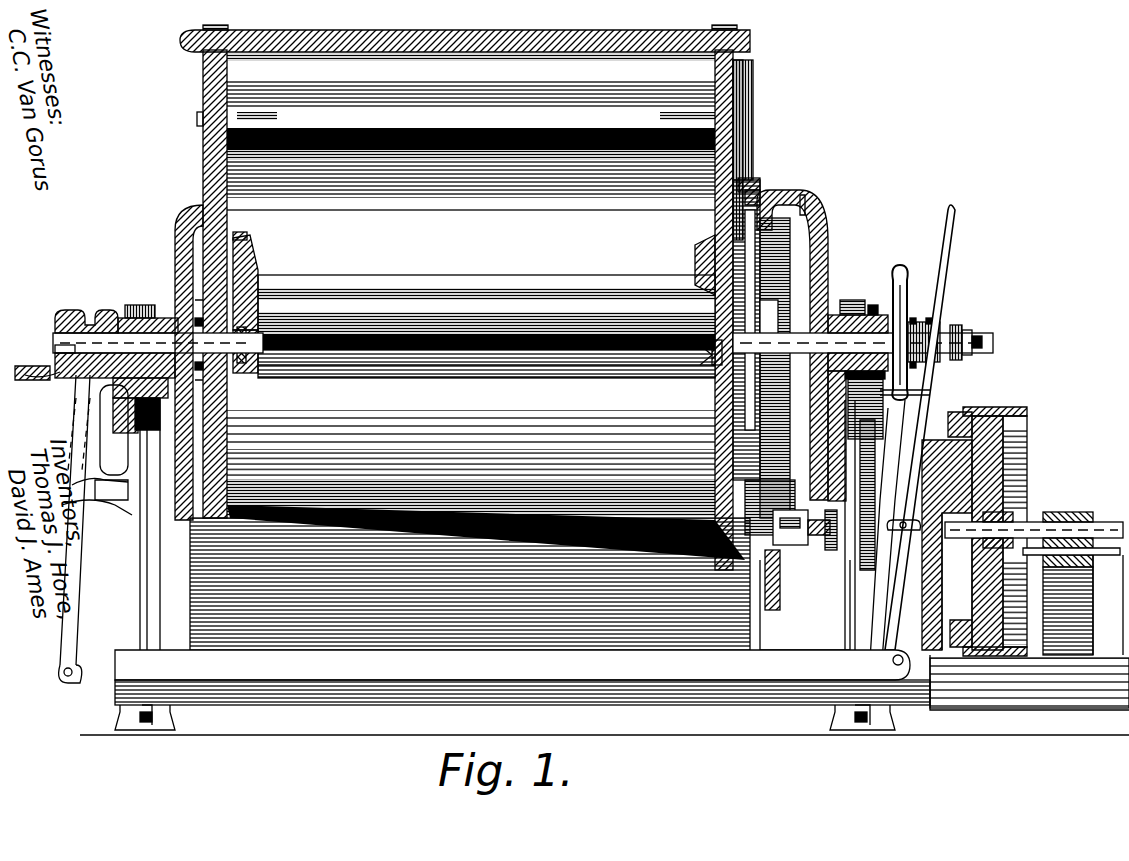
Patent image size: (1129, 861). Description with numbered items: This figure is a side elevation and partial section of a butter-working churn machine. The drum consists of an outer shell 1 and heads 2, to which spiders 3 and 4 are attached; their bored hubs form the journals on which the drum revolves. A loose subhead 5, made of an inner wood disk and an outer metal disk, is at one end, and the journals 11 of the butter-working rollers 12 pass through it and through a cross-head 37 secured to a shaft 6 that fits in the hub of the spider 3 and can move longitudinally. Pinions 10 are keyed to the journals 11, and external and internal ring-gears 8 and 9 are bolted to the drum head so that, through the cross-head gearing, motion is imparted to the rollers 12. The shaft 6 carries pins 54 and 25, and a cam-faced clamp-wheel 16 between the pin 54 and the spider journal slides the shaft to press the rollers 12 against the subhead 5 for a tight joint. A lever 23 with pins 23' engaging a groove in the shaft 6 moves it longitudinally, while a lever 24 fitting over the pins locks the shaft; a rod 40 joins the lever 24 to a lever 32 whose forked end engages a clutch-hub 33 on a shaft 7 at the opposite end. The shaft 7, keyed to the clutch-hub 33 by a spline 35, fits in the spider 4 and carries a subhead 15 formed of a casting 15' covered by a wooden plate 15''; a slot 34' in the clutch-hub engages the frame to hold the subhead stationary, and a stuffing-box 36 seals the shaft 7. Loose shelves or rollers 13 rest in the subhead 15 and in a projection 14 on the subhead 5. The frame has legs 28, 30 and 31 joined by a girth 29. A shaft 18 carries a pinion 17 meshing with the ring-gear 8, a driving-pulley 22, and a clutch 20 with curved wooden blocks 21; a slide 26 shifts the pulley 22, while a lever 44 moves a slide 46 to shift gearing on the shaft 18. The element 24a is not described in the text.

The outer shell of the drum 1 is at (408, 24).
The heads of the drum 2 is at (203, 96).
The spider 3 is at (818, 245).
The spider 4 is at (178, 248).
The loose subhead 5 is at (762, 285).
The shaft 6 is at (830, 340).
The shaft 7 is at (128, 330).
The external ring-gear 8 is at (760, 176).
The internal ring-gear 9 is at (760, 250).
The pinions 10 is at (712, 360).
The journals of the butter-working rollers 11 is at (700, 358).
The butter-working rollers 12 is at (460, 368).
The loose shelves or rollers 13 is at (425, 285).
The projection upon the subhead 14 is at (695, 250).
The subhead 15 is at (272, 282).
The casting 15' is at (298, 306).
The wooden plate 15'' is at (279, 225).
The clamp-wheel 16 is at (930, 392).
The pinion 17 is at (790, 545).
The shaft 18 is at (1042, 528).
The clutch 20 is at (830, 606).
The curved wooden blocks 21 is at (930, 420).
The pulley 22 is at (1015, 440).
The lever 23 is at (983, 337).
The pins or projections 23' is at (1000, 337).
The lever 24 is at (958, 255).
The lever arm 24a is at (900, 620).
The pin 25 is at (932, 326).
The slide 26 is at (1100, 540).
The leg of the frame 28 is at (1078, 632).
The cross-piece or girth 29 is at (1000, 672).
The leg of the frame 30 is at (805, 605).
The leg of the frame 31 is at (135, 568).
The lever 32 is at (72, 608).
The clutch-hub 33 is at (70, 312).
The slot or recess 34' is at (71, 420).
The spline or key 35 is at (55, 335).
The stuffing-box 36 is at (248, 372).
The cross-head 37 is at (820, 325).
The rod 40 is at (805, 675).
The lever 44 is at (1008, 470).
The slide 46 is at (822, 548).
The pin 54 is at (910, 325).